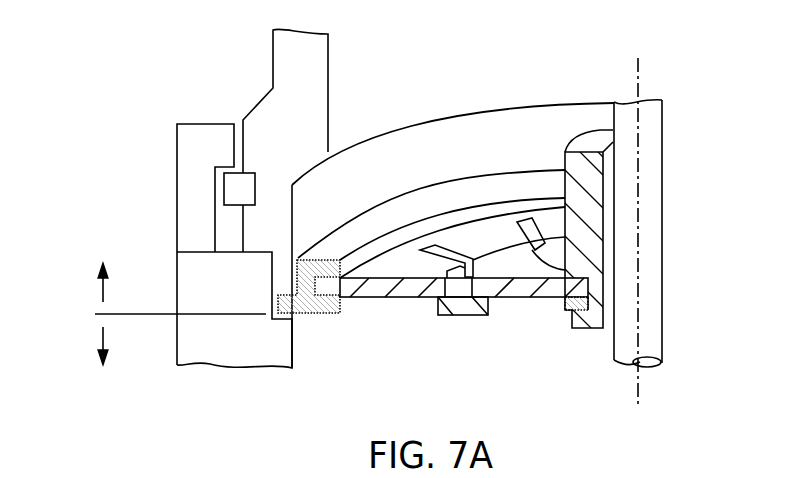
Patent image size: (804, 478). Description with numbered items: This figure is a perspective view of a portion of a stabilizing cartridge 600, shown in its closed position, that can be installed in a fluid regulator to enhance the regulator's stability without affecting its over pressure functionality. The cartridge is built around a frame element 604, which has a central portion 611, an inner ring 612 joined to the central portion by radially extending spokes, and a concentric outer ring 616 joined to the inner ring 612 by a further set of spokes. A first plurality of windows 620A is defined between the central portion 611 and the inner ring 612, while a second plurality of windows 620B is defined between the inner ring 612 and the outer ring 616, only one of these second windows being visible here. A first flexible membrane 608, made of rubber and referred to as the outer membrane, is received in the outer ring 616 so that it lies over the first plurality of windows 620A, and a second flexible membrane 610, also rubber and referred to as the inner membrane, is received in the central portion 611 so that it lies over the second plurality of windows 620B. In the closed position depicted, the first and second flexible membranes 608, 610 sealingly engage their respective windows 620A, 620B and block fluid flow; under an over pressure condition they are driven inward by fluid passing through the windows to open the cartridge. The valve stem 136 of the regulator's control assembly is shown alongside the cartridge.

The stabilizing cartridge 600 is at (418, 148).
The frame element 604 is at (300, 330).
The first flexible membrane 608 is at (405, 285).
The second flexible membrane 610 is at (513, 243).
The central portion 611 is at (608, 140).
The inner ring 612 is at (453, 305).
The outer ring 616 is at (348, 242).
The first plurality of windows 620A is at (400, 309).
The second plurality of windows 620B is at (536, 315).
The valve stem 136 is at (657, 287).